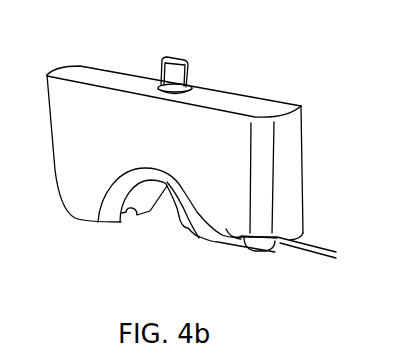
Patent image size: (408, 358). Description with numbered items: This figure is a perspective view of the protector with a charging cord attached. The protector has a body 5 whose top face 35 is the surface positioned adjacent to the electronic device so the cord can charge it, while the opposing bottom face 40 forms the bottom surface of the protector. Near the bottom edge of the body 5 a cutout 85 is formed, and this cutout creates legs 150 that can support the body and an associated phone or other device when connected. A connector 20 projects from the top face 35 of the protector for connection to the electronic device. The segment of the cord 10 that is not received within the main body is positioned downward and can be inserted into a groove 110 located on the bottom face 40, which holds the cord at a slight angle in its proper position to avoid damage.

The body 5 is at (231, 162).
The cord 10 is at (322, 245).
The connector tab 20 is at (180, 57).
The top face 35 is at (256, 102).
The bottom face 40 is at (269, 250).
The cutout 85 is at (188, 230).
The groove 110 is at (302, 231).
The legs 150 is at (86, 197).